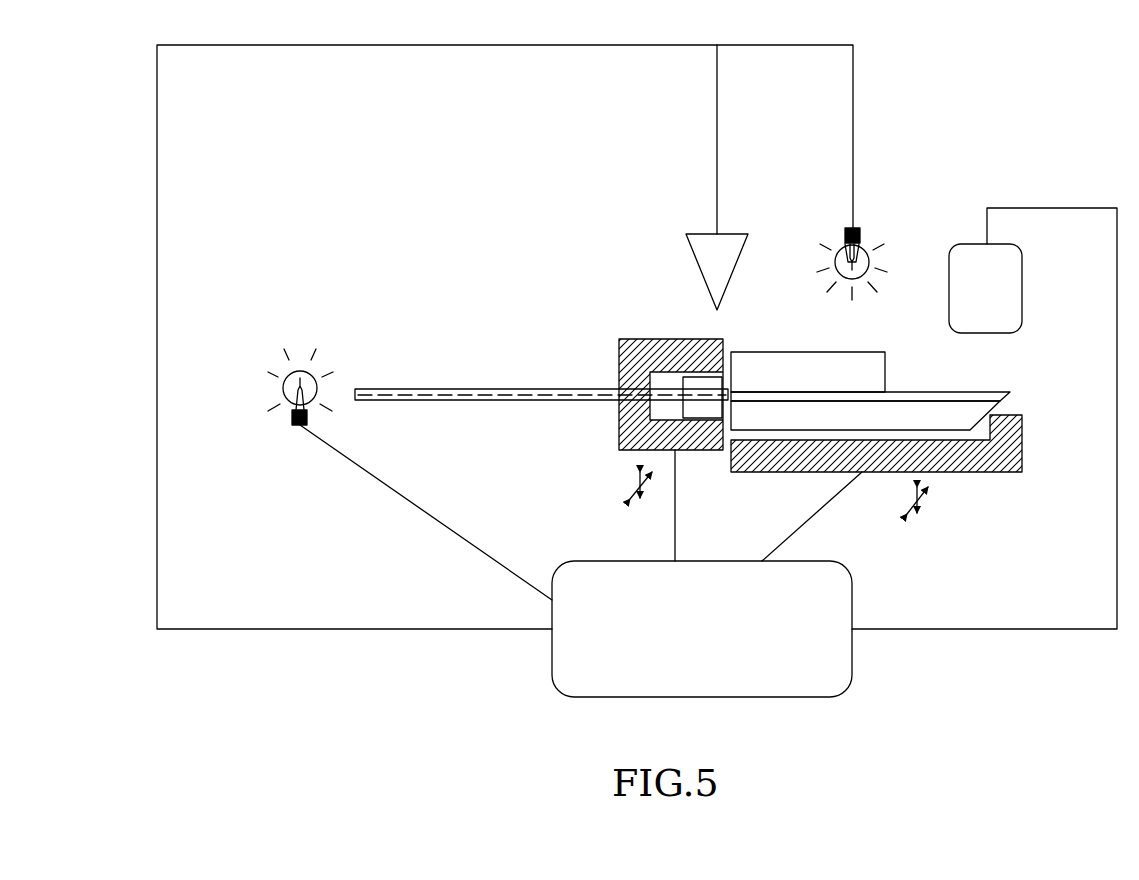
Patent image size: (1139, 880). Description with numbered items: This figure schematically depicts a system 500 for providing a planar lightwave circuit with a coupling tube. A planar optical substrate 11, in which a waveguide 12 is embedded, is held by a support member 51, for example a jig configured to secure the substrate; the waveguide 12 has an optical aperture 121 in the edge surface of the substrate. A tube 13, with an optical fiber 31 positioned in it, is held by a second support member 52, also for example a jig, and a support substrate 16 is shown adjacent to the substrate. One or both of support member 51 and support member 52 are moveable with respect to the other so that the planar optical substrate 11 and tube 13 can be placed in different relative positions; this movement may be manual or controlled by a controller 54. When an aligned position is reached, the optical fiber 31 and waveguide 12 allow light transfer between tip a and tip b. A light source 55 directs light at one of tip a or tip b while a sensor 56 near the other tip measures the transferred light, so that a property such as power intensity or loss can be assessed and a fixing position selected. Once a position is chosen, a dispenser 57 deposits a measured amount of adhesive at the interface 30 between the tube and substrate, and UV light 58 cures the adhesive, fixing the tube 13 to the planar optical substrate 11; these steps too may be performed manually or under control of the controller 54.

The system 500 is at (1000, 88).
The dispenser 57 is at (717, 272).
The UV light 58 is at (862, 242).
The sensor 56 is at (985, 288).
The light source 55 is at (280, 392).
The optical fiber 31 is at (531, 387).
The tip a is at (347, 386).
The support member 52 is at (671, 450).
The tube 13 is at (700, 376).
The support substrate 16 is at (808, 372).
The waveguide 12 is at (928, 396).
The planar optical substrate 11 is at (865, 413).
The optical aperture 121 is at (739, 392).
The tip b is at (1009, 409).
The support member 51 is at (876, 488).
The interface 30 is at (720, 452).
The controller 54 is at (702, 629).